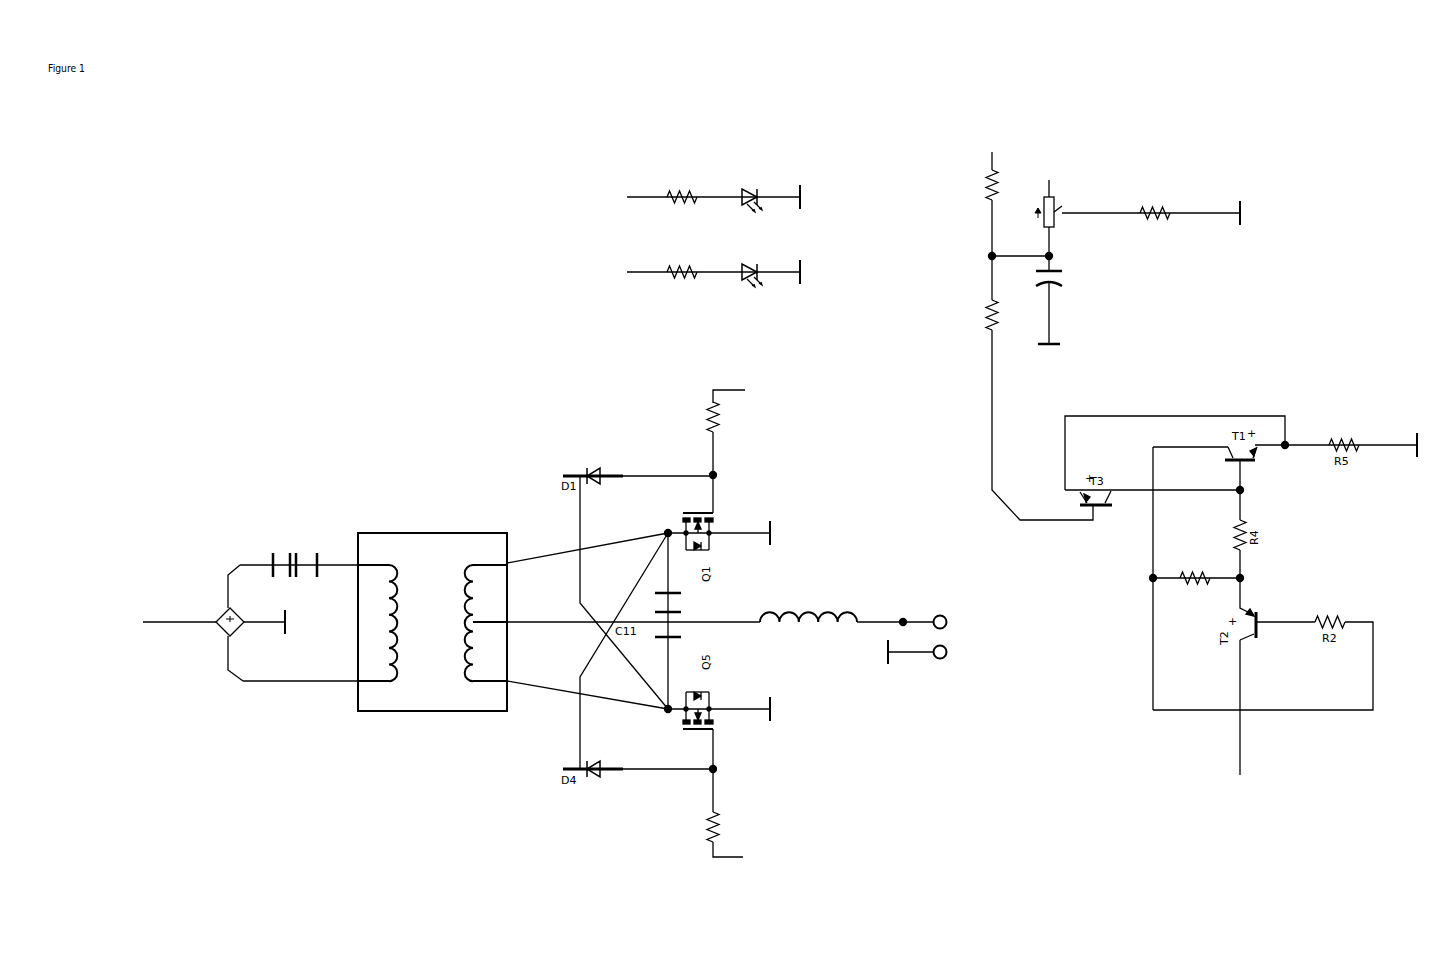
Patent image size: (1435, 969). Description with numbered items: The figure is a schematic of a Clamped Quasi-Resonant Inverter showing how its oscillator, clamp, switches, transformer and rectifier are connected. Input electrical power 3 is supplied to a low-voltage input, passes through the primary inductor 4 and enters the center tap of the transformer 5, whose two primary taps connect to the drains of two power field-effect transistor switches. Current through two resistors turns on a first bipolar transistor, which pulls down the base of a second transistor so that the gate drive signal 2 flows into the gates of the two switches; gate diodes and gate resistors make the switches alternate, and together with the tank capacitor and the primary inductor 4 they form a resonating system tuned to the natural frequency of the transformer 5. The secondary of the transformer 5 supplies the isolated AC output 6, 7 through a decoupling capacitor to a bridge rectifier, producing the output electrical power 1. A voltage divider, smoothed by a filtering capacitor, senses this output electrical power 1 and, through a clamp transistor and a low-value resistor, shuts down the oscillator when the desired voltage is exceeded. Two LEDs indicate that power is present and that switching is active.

The output electrical power 1 is at (143, 622).
The gate drive signal 2 is at (745, 390).
The input electrical power 3 is at (627, 272).
The primary inductor 4 is at (807, 615).
The transformer 5 is at (438, 536).
The isolated AC output 6 is at (240, 565).
The isolated AC output 7 is at (243, 681).